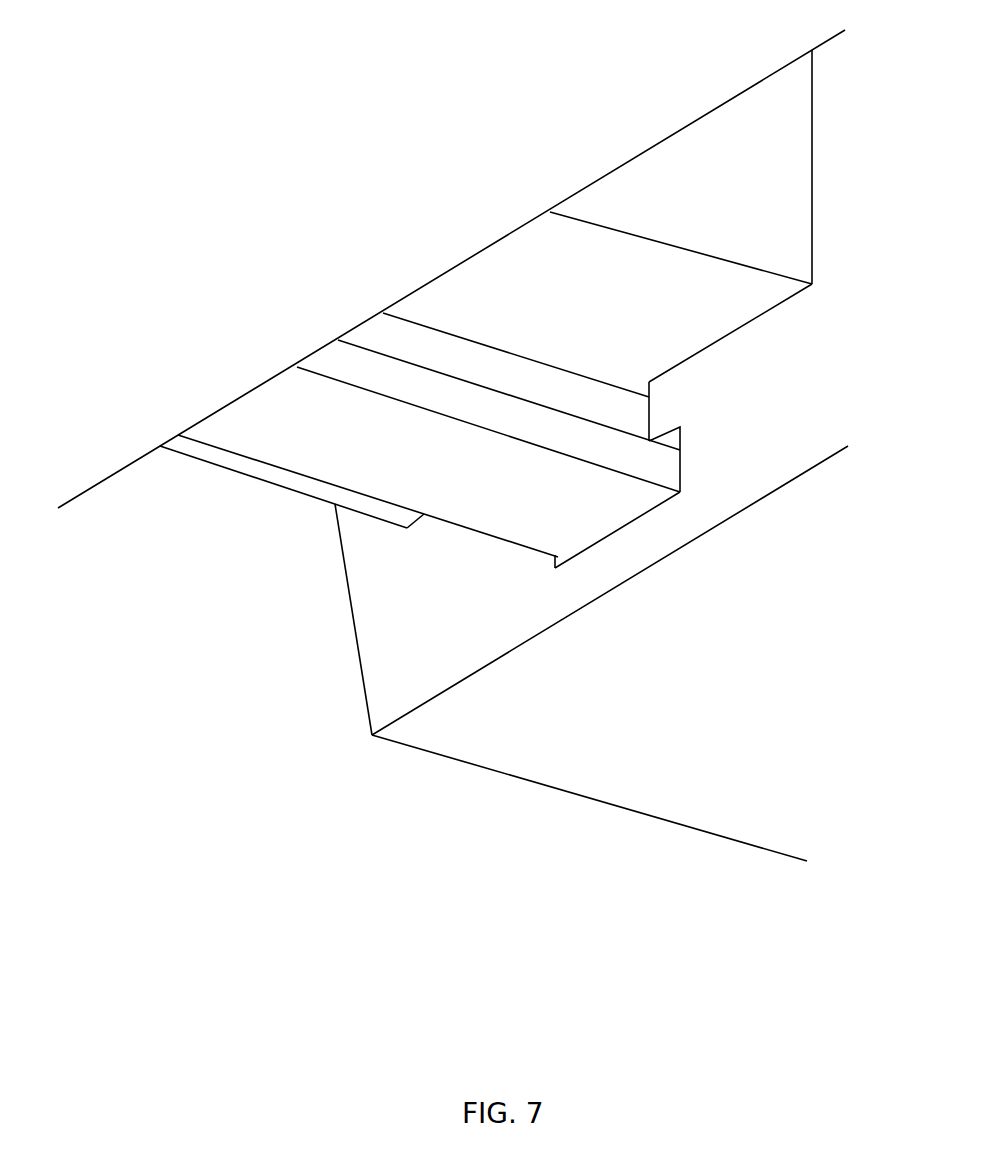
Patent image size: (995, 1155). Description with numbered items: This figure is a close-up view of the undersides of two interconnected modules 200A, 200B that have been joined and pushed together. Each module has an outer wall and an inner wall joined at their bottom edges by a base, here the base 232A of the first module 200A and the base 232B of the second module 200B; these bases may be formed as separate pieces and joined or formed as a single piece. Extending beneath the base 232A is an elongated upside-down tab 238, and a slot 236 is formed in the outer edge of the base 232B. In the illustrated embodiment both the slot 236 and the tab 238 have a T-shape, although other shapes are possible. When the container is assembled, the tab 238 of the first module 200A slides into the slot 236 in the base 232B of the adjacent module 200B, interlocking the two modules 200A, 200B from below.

The module 200A is at (451, 325).
The module 200B is at (473, 672).
The base 232A is at (710, 305).
The base 232B is at (515, 737).
The slot 236 is at (617, 513).
The tab 238 is at (300, 450).